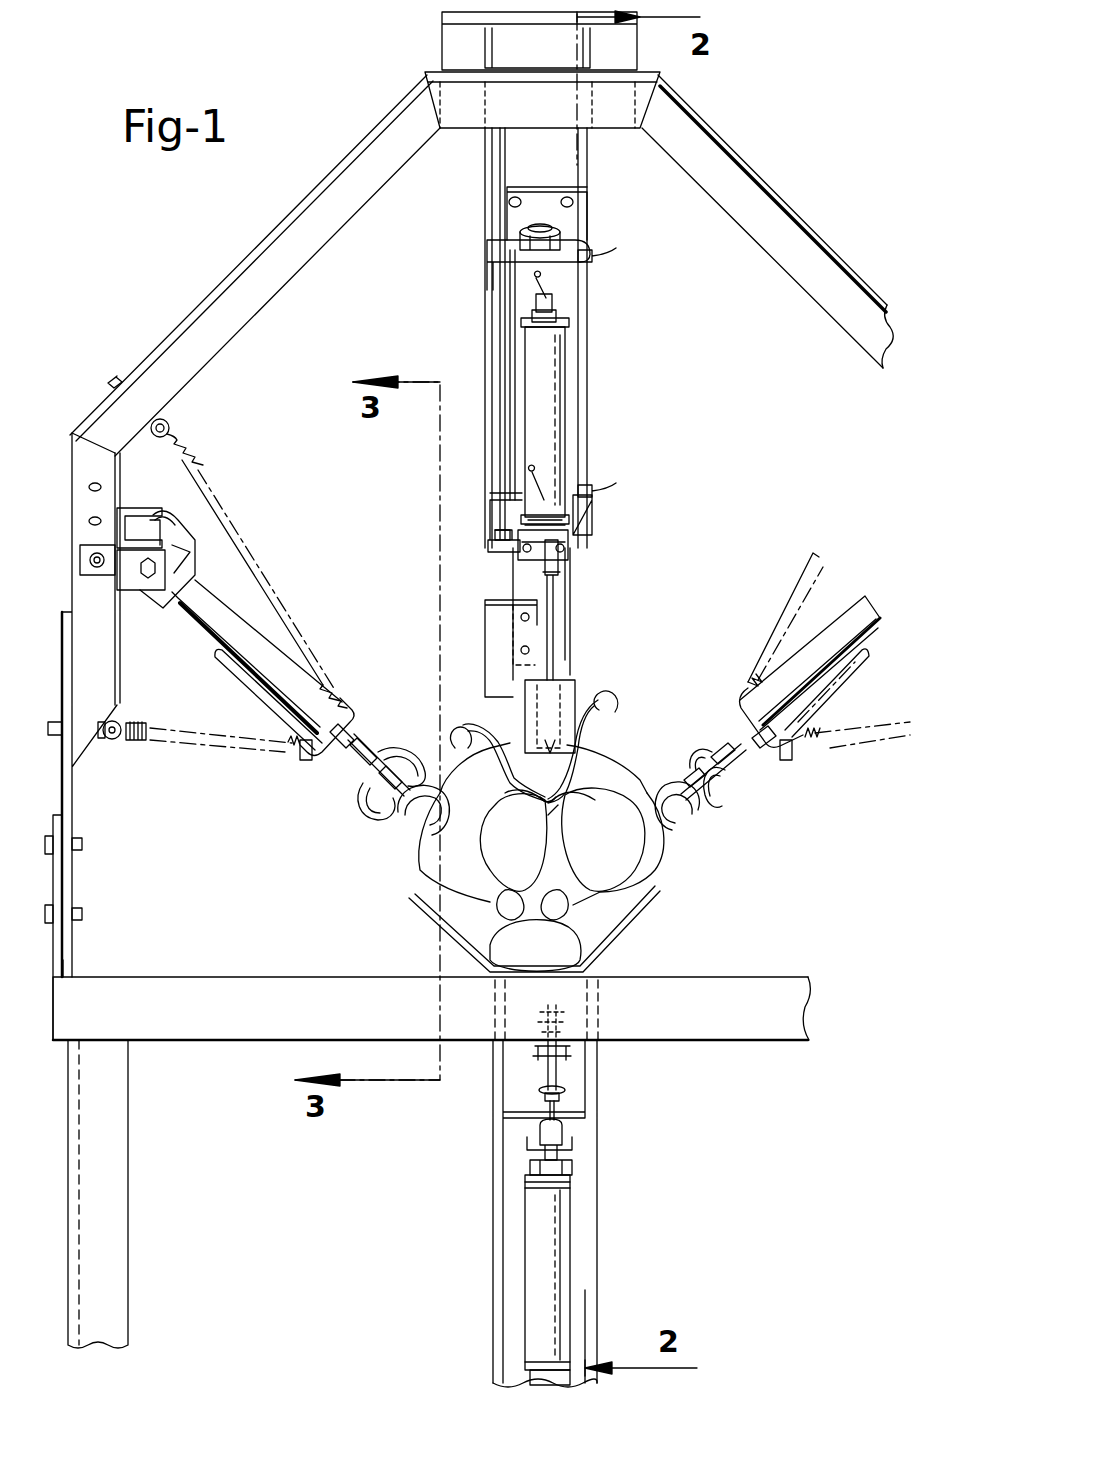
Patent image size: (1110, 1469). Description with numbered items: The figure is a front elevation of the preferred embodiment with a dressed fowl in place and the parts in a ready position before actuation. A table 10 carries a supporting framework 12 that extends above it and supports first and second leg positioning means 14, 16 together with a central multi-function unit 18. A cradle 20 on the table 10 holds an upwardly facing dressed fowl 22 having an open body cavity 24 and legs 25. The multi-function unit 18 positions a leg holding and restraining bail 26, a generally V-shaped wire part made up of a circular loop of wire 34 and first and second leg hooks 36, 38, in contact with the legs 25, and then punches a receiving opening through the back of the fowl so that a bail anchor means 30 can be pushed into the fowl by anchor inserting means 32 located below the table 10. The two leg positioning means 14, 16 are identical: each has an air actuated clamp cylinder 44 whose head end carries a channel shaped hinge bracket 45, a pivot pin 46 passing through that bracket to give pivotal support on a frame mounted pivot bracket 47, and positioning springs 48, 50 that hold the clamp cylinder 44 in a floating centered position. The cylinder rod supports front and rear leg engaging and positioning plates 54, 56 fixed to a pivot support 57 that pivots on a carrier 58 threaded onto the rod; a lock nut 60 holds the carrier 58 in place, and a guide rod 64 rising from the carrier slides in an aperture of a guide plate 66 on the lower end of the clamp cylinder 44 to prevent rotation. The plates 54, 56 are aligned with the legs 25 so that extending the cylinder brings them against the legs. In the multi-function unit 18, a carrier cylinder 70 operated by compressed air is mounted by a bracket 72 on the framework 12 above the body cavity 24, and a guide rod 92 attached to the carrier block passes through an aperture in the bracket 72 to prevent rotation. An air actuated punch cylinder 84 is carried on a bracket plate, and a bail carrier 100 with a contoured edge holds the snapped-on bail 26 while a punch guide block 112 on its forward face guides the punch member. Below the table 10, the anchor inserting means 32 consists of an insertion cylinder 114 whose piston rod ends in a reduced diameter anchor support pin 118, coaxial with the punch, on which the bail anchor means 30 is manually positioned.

The table 10 is at (242, 974).
The supporting framework 12 is at (222, 286).
The first leg positioning means 14 is at (247, 612).
The second leg positioning means 16 is at (742, 604).
The central multi-function unit 18 is at (566, 344).
The cradle 20 is at (622, 940).
The dressed fowl 22 is at (574, 847).
The open body cavity 24 is at (568, 808).
The legs 25 is at (494, 875).
The leg holding and restraining bail 26 is at (580, 766).
The bail anchor means 30 is at (560, 1069).
The anchor inserting means 32 is at (525, 1195).
The circular loop of wire 34 is at (532, 824).
The first leg hook 36 is at (463, 702).
The second leg hook 38 is at (604, 708).
The air actuated clamp cylinder 44 is at (206, 641).
The channel shaped hinge bracket 45 is at (176, 542).
The pivot pin 46 is at (150, 582).
The frame mounted pivot bracket 47 is at (141, 512).
The positioning spring 48 is at (196, 454).
The positioning spring 50 is at (138, 742).
The front leg engaging and positioning plate 54 is at (402, 831).
The rear leg engaging and positioning plate 56 is at (396, 760).
The pivot support 57 is at (362, 790).
The carrier 58 is at (368, 748).
The lock nut 60 is at (344, 724).
The guide rod 64 is at (252, 696).
The guide plate 66 is at (302, 757).
The carrier cylinder 70 is at (566, 292).
The bracket 72 is at (580, 211).
The air actuated punch cylinder 84 is at (570, 438).
The guide rod 92 is at (500, 171).
The bail carrier 100 is at (486, 610).
The punch guide block 112 is at (562, 692).
The insertion cylinder 114 is at (566, 1238).
The anchor support pin 118 is at (556, 1108).